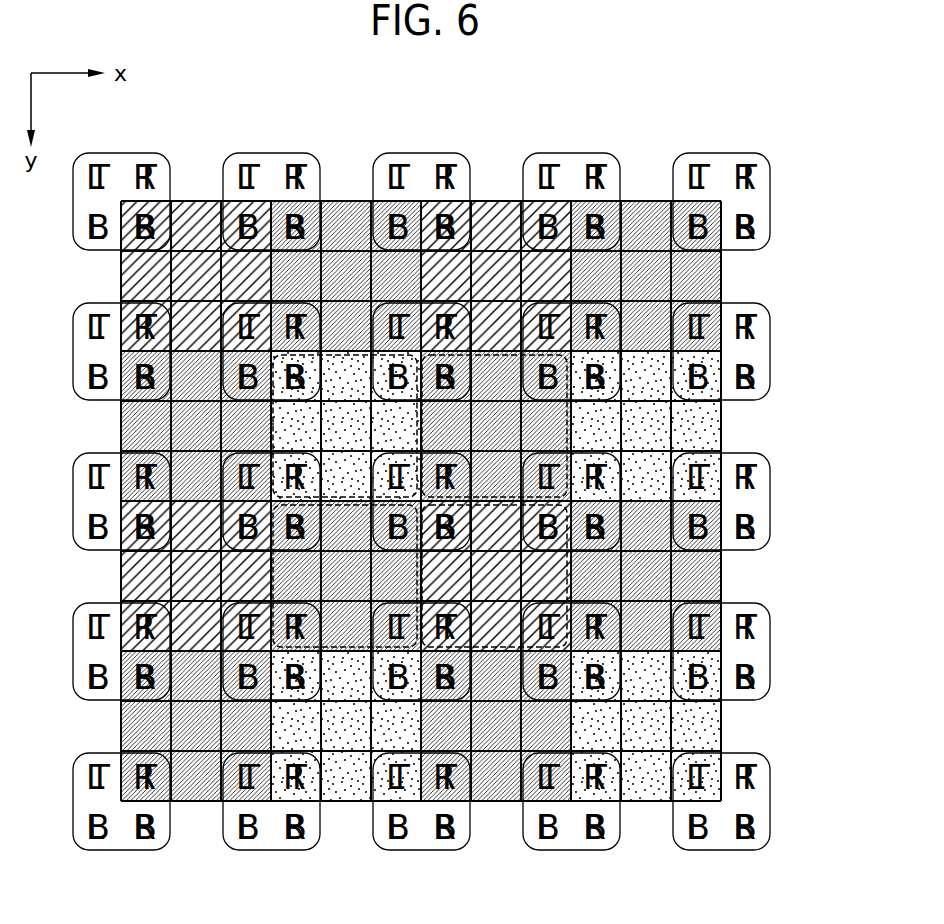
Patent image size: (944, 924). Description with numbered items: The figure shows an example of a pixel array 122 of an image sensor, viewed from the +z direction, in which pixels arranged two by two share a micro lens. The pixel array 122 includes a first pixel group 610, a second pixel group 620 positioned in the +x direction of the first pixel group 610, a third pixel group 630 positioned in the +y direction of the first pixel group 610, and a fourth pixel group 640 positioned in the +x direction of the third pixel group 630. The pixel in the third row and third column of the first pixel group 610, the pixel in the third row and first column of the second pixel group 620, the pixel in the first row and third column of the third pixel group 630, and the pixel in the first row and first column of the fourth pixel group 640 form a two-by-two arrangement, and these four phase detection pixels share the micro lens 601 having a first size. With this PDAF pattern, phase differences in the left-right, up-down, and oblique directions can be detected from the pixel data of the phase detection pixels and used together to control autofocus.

The pixel array 122 is at (696, 106).
The micro lens 601 is at (433, 457).
The first pixel group 610 is at (353, 357).
The second pixel group 620 is at (503, 357).
The third pixel group 630 is at (342, 647).
The fourth pixel group 640 is at (492, 647).